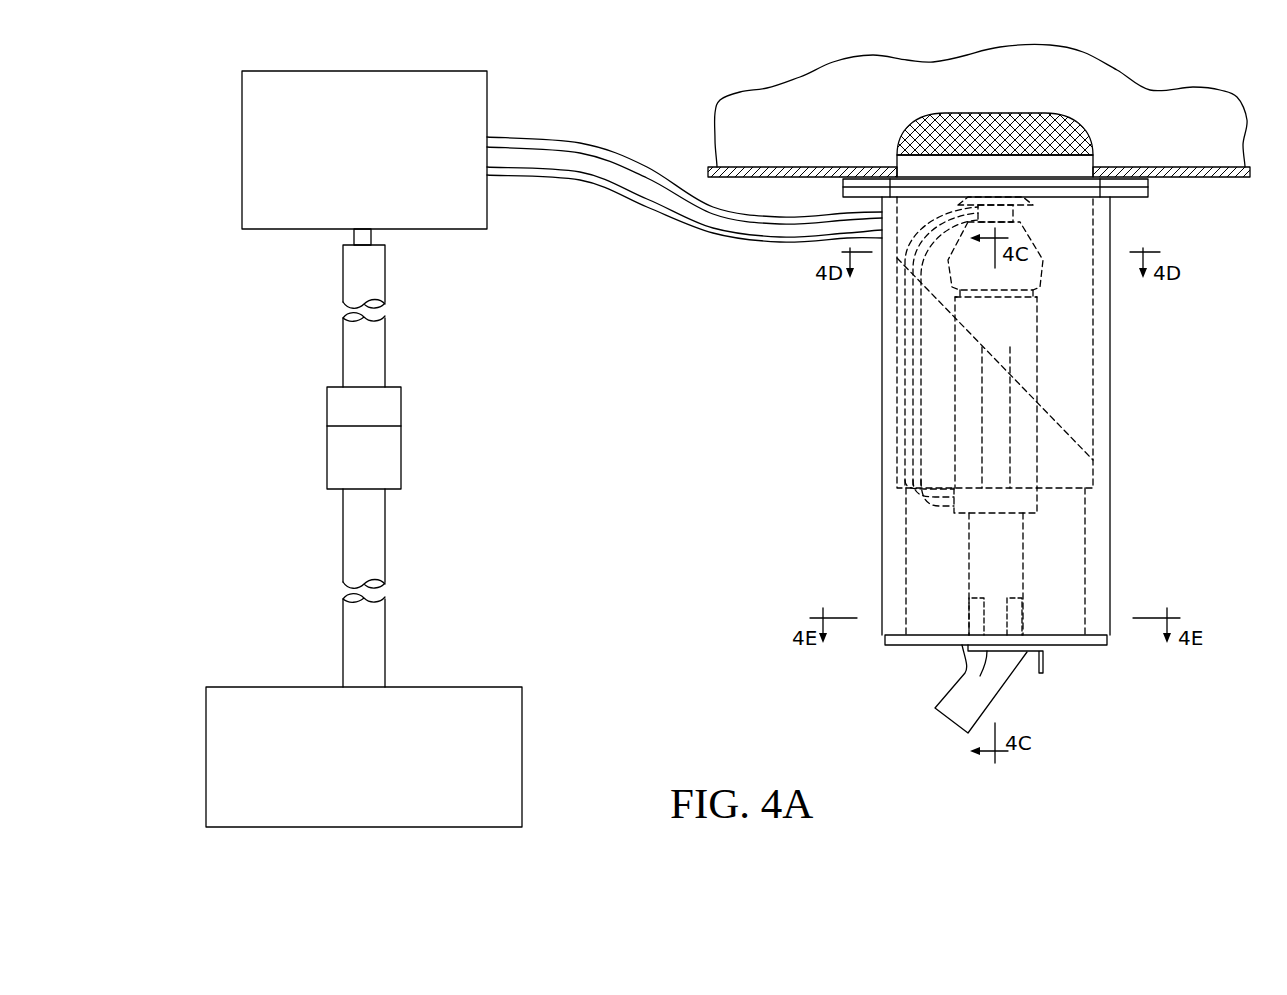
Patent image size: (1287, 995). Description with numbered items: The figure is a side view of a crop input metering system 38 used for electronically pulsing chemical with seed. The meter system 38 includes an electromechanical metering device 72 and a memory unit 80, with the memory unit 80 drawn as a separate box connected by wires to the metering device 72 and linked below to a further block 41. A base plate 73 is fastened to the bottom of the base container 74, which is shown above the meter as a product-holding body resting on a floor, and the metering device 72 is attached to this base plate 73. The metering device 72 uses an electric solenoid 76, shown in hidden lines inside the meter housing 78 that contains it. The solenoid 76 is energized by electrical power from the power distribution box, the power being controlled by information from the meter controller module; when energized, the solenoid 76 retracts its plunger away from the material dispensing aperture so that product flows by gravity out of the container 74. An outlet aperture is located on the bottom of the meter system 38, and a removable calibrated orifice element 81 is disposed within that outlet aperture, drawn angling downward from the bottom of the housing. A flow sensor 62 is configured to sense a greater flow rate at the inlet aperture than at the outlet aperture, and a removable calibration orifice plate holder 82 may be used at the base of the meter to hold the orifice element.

The crop input metering system 38 is at (629, 115).
The power source 41 is at (523, 729).
The flow sensor 62 is at (1023, 614).
The metering device 72 is at (1119, 369).
The base plate 73 is at (1147, 182).
The base container 74 is at (1197, 100).
The electric solenoid 76 is at (1037, 432).
The meter housing 78 is at (1110, 523).
The memory unit 80 is at (265, 143).
The removable calibrated orifice element 81 is at (985, 668).
The removable calibration orifice plate holder 82 is at (1108, 646).